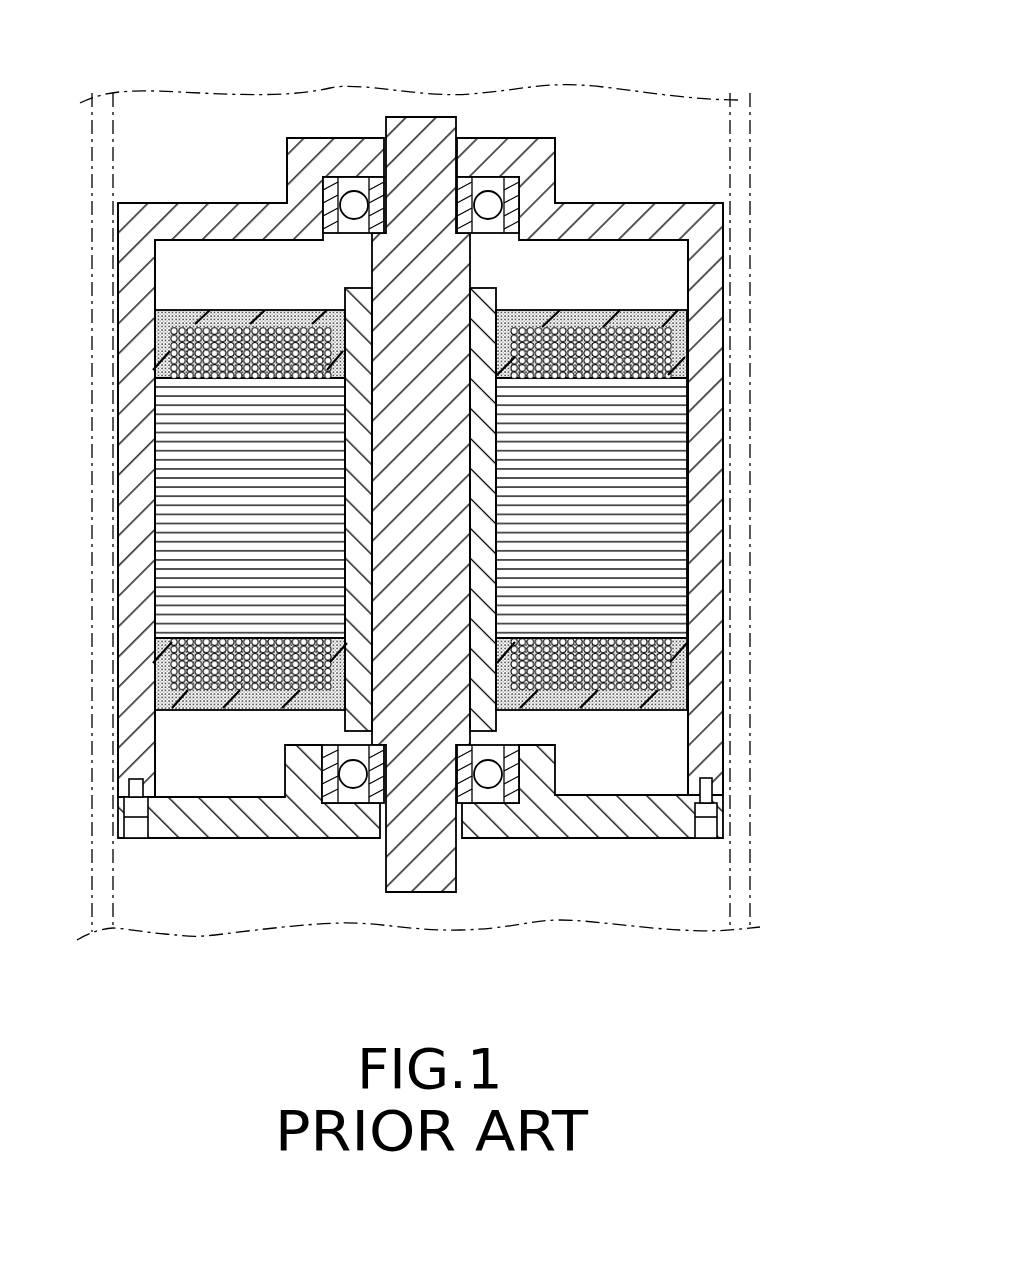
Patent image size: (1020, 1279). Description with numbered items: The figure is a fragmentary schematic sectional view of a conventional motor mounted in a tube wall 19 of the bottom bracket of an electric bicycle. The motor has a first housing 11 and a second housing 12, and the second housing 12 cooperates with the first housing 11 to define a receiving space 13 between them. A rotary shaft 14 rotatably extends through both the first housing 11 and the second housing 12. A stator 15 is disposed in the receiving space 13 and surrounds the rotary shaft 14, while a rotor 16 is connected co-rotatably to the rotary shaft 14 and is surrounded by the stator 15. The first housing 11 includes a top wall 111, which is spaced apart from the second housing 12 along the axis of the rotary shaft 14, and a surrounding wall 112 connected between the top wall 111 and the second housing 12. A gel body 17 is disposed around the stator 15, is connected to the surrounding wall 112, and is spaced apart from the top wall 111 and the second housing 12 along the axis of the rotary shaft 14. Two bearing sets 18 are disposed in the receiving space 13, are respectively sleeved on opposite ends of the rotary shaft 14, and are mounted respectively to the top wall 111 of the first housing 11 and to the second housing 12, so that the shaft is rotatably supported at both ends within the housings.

The first housing 11 is at (700, 203).
The top wall 111 is at (672, 212).
The surrounding wall 112 is at (718, 345).
The second housing 12 is at (655, 839).
The receiving space 13 is at (655, 270).
The rotary shaft 14 is at (414, 128).
The stator 15 is at (675, 463).
The rotor 16 is at (488, 293).
The gel body 17 is at (636, 310).
The bearing sets 18 is at (355, 195).
The tube wall 19 is at (752, 553).